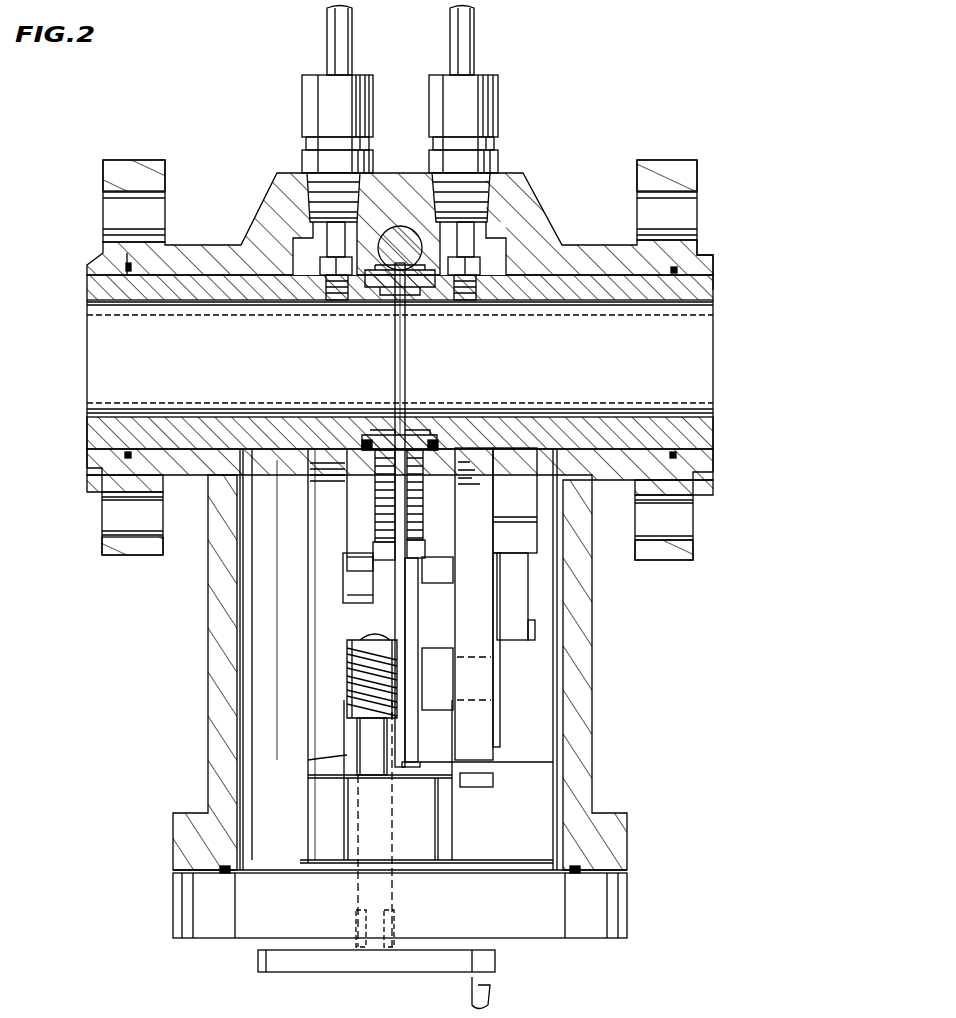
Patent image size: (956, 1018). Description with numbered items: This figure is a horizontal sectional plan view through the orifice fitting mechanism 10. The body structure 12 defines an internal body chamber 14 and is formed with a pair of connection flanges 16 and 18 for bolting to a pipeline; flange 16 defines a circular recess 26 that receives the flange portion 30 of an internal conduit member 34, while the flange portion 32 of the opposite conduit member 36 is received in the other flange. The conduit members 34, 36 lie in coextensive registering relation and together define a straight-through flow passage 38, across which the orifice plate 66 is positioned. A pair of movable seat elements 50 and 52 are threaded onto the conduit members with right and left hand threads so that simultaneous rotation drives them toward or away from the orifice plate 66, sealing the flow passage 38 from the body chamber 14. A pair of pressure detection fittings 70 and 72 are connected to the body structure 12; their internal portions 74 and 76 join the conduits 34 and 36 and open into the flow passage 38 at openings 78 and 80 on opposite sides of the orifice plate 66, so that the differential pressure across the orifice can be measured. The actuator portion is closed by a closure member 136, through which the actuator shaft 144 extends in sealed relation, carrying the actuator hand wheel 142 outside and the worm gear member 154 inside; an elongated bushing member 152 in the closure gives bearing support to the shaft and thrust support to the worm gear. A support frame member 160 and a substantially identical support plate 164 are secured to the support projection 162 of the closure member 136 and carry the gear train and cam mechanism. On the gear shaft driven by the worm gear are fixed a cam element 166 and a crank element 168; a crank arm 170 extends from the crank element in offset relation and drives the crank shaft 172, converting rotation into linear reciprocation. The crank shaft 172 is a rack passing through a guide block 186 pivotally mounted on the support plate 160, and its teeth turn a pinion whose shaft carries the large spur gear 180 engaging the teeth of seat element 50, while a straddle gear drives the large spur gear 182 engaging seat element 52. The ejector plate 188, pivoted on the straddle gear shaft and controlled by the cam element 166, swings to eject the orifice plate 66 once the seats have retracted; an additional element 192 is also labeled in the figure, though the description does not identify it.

The orifice fitting mechanism 10 is at (595, 132).
The body structure 12 is at (215, 661).
The internal body chamber 14 is at (247, 530).
The connection flange 16 is at (131, 162).
The connection flange 18 is at (680, 166).
The circular recess 26 is at (112, 482).
The flange portion 30 is at (125, 264).
The flange portion 32 is at (690, 248).
The internal conduit member 34 is at (110, 412).
The internal conduit member 36 is at (680, 415).
The flow passage 38 is at (214, 390).
The movable seat element 50 is at (370, 438).
The movable seat element 52 is at (425, 438).
The orifice plate 66 is at (396, 360).
The pressure detection fitting 70 is at (306, 165).
The pressure detection fitting 72 is at (487, 165).
The internal portion 74 is at (330, 243).
The internal portion 76 is at (500, 255).
The opening 78 is at (339, 300).
The opening 80 is at (475, 300).
The closure member 136 is at (605, 914).
The actuator hand wheel 142 is at (290, 965).
The actuator shaft 144 is at (378, 950).
The bushing member 152 is at (350, 783).
The worm gear member 154 is at (350, 690).
The support frame member 160 is at (478, 793).
The support projection 162 is at (427, 840).
The support plate 164 is at (308, 760).
The cam element 166 is at (472, 758).
The crank element 168 is at (500, 712).
The crank arm 170 is at (537, 630).
The crank shaft 172 is at (520, 590).
The large spur gear 180 is at (418, 496).
The large spur gear 182 is at (382, 495).
The guide block 186 is at (522, 470).
The ejector plate 188 is at (378, 520).
The gear block 192 is at (345, 600).